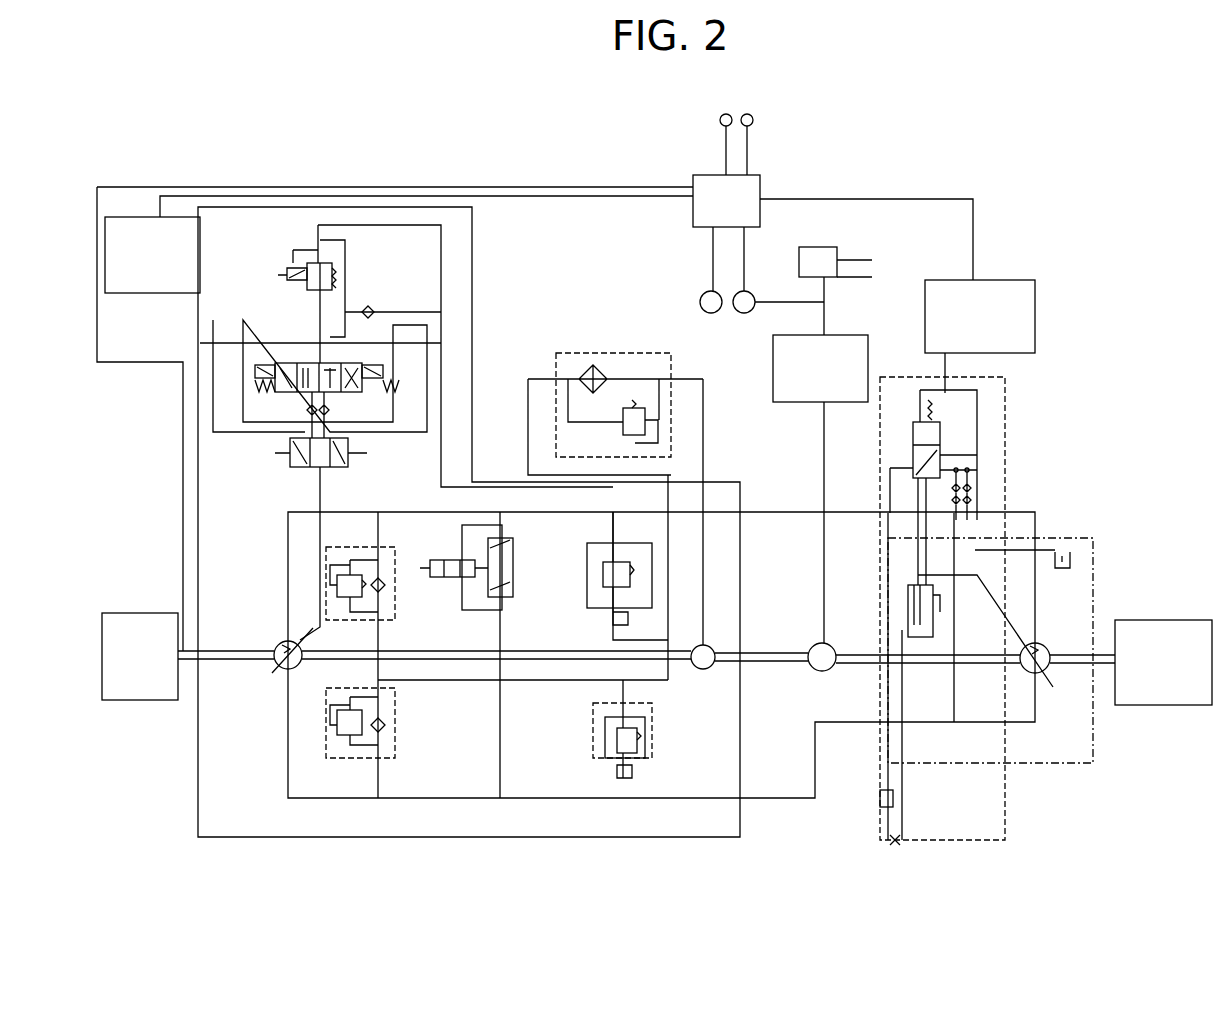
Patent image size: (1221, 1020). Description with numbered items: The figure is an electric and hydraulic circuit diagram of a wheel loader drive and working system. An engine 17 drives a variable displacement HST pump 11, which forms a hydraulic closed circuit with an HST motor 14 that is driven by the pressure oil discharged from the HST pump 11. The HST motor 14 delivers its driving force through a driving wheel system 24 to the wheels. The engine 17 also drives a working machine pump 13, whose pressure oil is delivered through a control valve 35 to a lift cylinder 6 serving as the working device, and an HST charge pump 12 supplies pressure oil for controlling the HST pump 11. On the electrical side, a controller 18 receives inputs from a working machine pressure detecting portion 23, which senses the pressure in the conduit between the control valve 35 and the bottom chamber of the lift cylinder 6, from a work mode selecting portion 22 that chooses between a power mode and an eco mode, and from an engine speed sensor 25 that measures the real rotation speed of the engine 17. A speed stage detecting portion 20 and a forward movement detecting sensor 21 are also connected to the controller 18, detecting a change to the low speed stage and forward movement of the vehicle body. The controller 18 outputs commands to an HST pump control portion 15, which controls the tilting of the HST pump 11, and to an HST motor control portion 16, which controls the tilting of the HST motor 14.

The lift cylinder 6 is at (840, 250).
The HST pump 11 is at (278, 642).
The HST charge pump 12 is at (712, 642).
The working machine pump 13 is at (815, 643).
The HST motor 14 is at (1053, 640).
The HST pump control portion 15 is at (133, 294).
The HST motor control portion 16 is at (1008, 280).
The engine 17 is at (140, 612).
The controller 18 is at (692, 213).
The speed stage detecting portion 20 is at (729, 114).
The forward movement detecting sensor 21 is at (752, 114).
The work mode selecting portion 22 is at (706, 313).
The working machine pressure detecting portion 23 is at (740, 313).
The driving wheel system 24 is at (1165, 618).
The engine speed sensor 25 is at (186, 642).
The control valve 35 is at (846, 335).